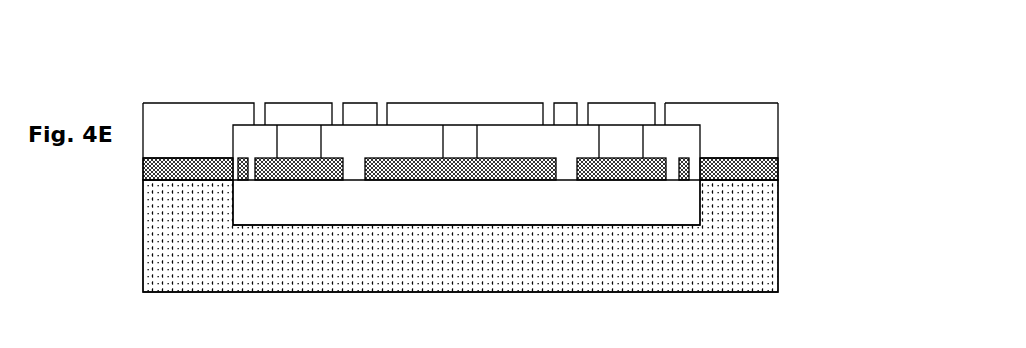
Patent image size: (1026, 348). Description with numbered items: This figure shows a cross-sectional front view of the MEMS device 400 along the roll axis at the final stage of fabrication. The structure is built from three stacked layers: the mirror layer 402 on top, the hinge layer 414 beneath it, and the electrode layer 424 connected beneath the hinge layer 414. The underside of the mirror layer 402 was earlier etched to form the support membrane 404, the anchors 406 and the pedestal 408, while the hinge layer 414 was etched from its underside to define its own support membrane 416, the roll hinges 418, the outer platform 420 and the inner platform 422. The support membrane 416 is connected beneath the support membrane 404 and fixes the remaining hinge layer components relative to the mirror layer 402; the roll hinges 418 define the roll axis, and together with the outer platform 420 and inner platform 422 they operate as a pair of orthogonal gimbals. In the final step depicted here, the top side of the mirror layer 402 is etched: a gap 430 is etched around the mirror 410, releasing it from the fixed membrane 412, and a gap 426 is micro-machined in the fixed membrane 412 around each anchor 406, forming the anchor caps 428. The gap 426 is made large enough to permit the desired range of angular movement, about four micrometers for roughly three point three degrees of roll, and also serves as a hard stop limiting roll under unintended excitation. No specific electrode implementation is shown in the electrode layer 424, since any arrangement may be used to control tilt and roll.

The MEMS device 400 is at (783, 76).
The mirror layer 402 is at (802, 120).
The support membrane 404 is at (163, 132).
The anchors 406 is at (322, 157).
The pedestal 408 is at (480, 151).
The mirror 410 is at (468, 101).
The fixed membrane 412 is at (168, 103).
The hinge layer 414 is at (802, 163).
The support membrane 416 is at (143, 170).
The roll hinges 418 is at (245, 183).
The outer platform 420 is at (323, 182).
The inner platform 422 is at (440, 182).
The electrode layer 424 is at (802, 240).
The gap 426 is at (261, 115).
The anchor caps 428 is at (297, 103).
The gap 430 is at (382, 105).